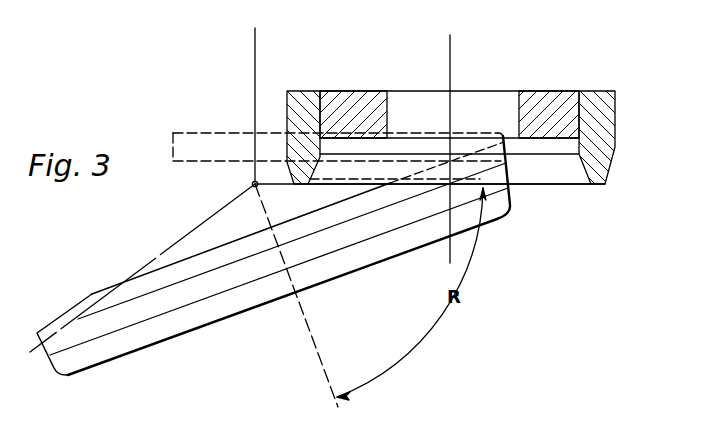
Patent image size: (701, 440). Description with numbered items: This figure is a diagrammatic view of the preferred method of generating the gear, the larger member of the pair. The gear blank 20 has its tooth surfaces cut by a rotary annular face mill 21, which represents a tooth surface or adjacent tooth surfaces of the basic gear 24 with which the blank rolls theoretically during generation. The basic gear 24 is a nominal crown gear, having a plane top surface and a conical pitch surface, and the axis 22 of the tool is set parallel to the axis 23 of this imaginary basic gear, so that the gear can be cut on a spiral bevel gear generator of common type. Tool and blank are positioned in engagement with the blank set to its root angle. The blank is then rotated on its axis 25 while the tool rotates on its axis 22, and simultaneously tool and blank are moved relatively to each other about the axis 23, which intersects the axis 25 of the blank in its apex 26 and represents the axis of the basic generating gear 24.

The gear blank 20 is at (388, 258).
The rotary annular face mill 21 is at (605, 157).
The axis of the tool 22 is at (450, 66).
The axis of the basic gear 23 is at (264, 74).
The basic gear 24 is at (195, 158).
The axis of the blank 25 is at (314, 343).
The apex 26 is at (252, 184).